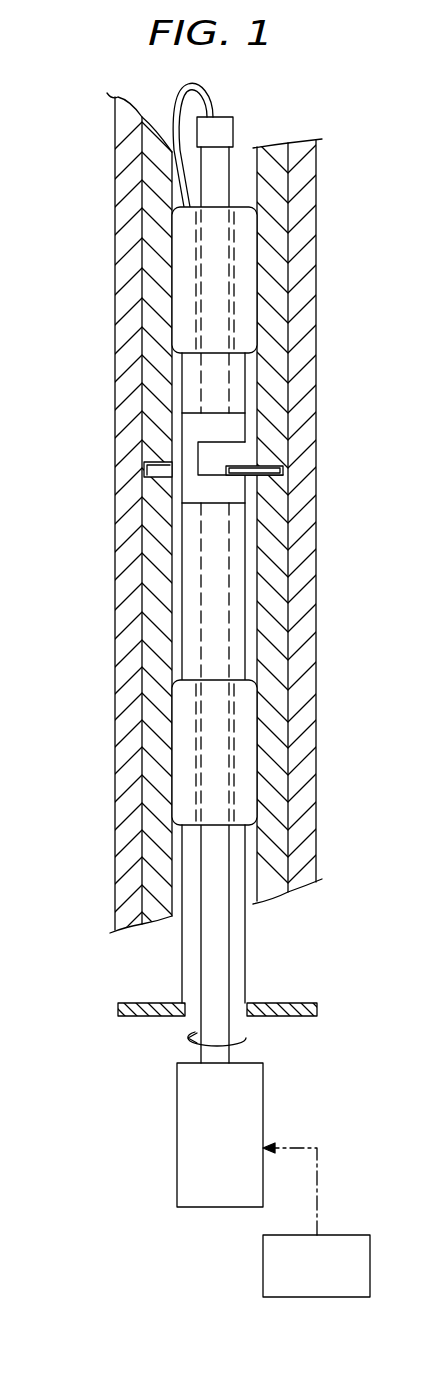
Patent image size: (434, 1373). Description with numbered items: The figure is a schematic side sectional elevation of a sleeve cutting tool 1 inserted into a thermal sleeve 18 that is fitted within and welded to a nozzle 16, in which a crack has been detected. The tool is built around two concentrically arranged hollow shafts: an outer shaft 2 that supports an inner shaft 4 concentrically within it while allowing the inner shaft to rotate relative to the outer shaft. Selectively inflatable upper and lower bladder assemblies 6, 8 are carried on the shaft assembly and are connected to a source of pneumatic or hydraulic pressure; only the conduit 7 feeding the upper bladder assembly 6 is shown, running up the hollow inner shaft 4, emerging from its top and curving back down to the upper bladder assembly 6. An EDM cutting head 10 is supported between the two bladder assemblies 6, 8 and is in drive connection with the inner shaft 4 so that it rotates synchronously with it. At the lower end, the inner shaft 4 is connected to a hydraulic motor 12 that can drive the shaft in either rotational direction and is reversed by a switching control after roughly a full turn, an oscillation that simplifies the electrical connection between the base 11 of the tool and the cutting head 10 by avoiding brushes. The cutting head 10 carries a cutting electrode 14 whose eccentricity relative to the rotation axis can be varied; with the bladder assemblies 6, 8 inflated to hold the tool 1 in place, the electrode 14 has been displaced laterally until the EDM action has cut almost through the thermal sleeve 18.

The sleeve cutting tool 1 is at (122, 1045).
The outer shaft 2 is at (185, 960).
The inner shaft 4 is at (203, 985).
The upper bladder assembly 6 is at (182, 252).
The conduit 7 is at (215, 108).
The lower bladder assembly 8 is at (183, 722).
The EDM cutting head 10 is at (187, 458).
The base 11 is at (115, 1008).
The hydraulic motor 12 is at (185, 1098).
The cutting electrode 14 is at (227, 463).
The nozzle 16 is at (120, 173).
The thermal sleeve 18 is at (152, 313).